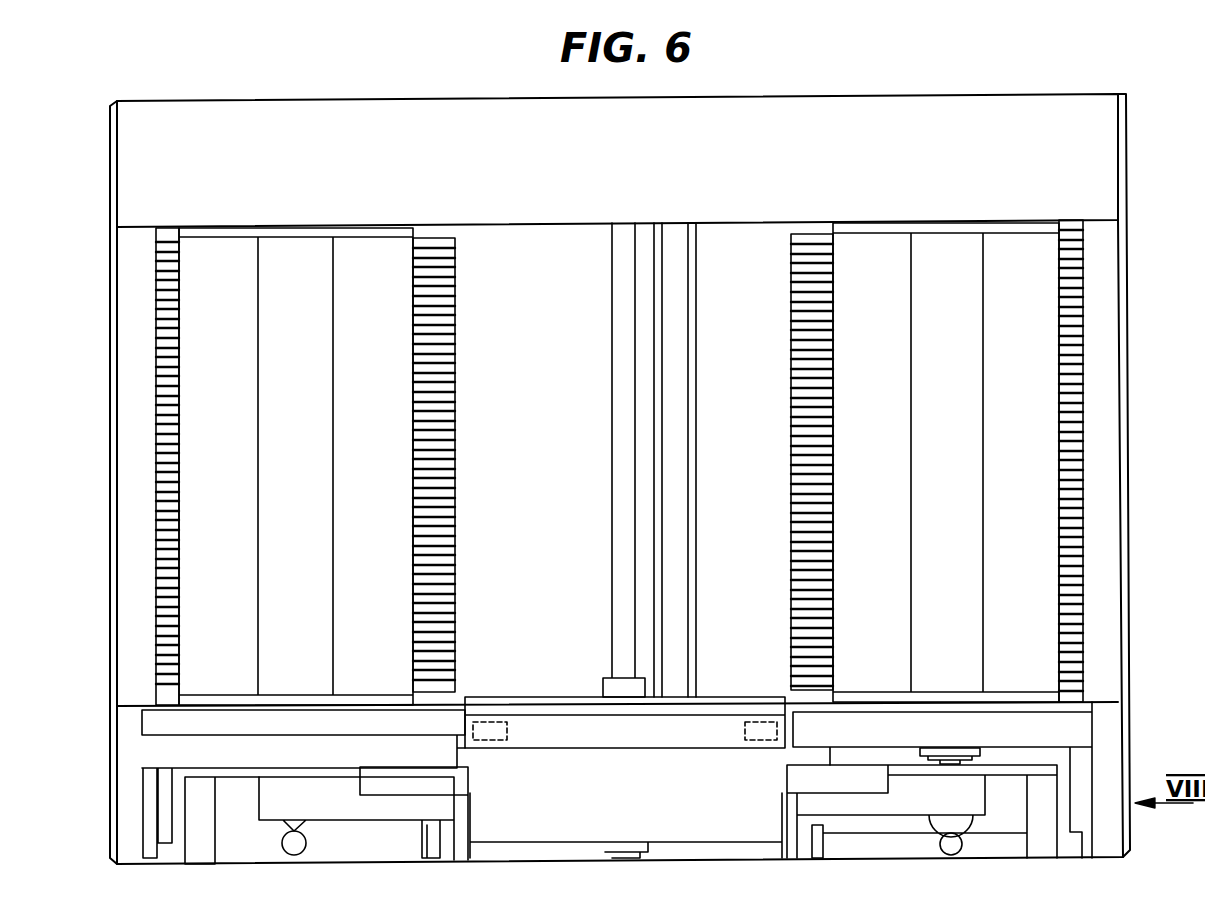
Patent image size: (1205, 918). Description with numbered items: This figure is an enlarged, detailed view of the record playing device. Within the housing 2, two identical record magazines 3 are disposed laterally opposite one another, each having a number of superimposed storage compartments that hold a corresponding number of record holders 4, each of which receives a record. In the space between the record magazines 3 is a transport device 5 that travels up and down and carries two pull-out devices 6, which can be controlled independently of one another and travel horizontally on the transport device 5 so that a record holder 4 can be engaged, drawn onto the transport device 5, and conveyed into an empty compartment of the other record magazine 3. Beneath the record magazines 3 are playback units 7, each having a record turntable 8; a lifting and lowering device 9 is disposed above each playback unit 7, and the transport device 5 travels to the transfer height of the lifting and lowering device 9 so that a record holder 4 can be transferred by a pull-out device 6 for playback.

The housing 2 is at (1112, 180).
The record magazine 3 is at (383, 253).
The record holder 4 is at (451, 277).
The transport device 5 is at (568, 705).
The pull-out device 6 is at (482, 722).
The playback unit 7 is at (337, 805).
The record turntable 8 is at (978, 750).
The lifting and lowering device 9 is at (374, 752).